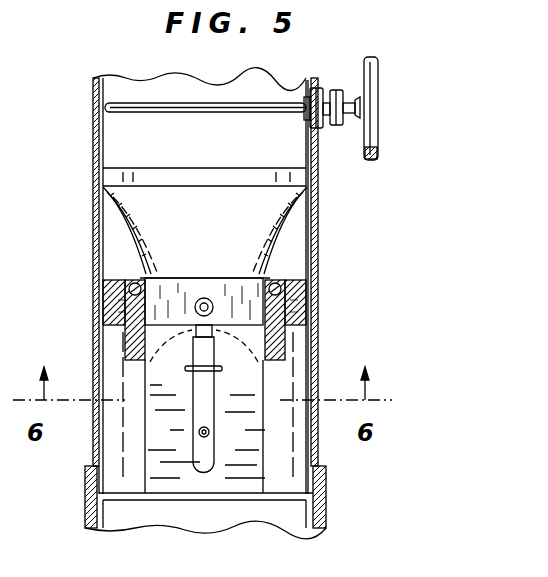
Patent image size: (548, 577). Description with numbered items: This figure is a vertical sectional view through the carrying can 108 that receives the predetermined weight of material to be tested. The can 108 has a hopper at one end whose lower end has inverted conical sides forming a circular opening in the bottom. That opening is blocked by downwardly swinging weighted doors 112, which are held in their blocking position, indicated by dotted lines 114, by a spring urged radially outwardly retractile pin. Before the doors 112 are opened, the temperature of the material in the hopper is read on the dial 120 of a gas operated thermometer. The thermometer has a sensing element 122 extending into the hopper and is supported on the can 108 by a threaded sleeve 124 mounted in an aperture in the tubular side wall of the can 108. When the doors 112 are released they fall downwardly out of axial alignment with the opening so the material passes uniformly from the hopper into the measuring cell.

The carrying can 108 is at (318, 227).
The weighted doors 112 is at (138, 343).
The dotted lines 114 is at (234, 297).
The dial 120 is at (367, 62).
The sensing element 122 is at (146, 107).
The threaded sleeve 124 is at (338, 128).